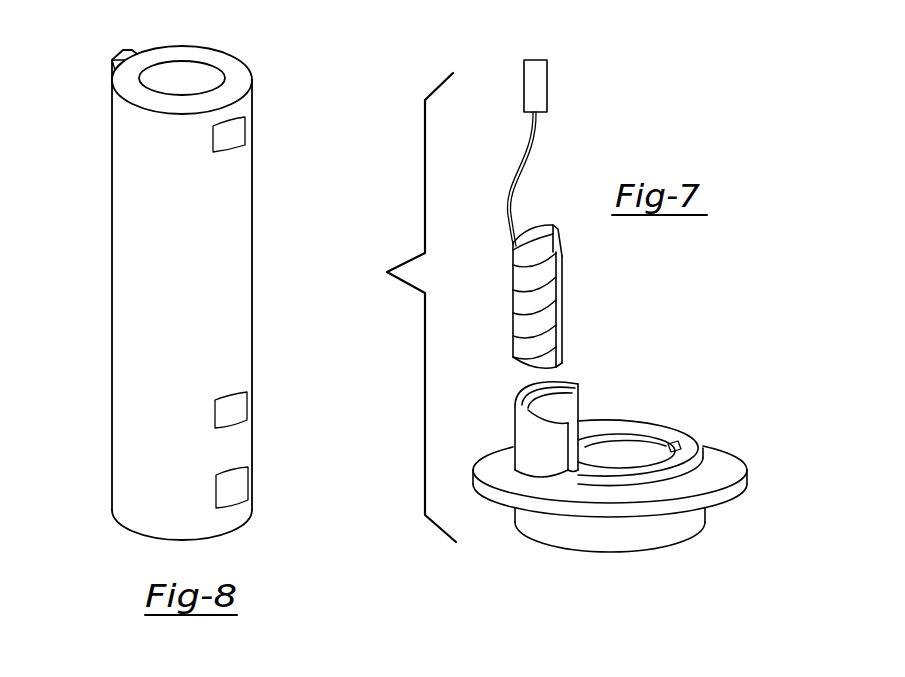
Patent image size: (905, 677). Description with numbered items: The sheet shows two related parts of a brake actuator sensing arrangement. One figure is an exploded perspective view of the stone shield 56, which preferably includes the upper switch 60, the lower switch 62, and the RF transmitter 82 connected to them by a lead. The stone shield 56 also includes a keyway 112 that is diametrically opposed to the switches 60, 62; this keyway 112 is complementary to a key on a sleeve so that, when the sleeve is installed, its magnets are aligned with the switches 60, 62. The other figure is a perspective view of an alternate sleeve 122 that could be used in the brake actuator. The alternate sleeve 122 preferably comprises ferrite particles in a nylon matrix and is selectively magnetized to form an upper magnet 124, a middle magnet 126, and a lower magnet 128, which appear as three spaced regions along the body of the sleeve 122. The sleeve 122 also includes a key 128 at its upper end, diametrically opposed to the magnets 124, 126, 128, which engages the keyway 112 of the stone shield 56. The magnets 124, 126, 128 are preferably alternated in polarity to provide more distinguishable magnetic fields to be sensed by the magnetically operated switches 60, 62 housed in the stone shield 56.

In FIG. 7, the stone shield 56 is at (664, 388).
In FIG. 7, the upper switch 60 is at (552, 346).
In FIG. 7, the lower switch 62 is at (552, 281).
In FIG. 7, the RF transmitter 82 is at (513, 300).
In FIG. 7, the keyway 112 is at (678, 442).
In FIG. 8, the alternate sleeve 122 is at (252, 55).
In FIG. 8, the upper magnet 124 is at (245, 137).
In FIG. 8, the middle magnet 126 is at (240, 410).
In FIG. 8, the lower magnet 128 is at (122, 50).